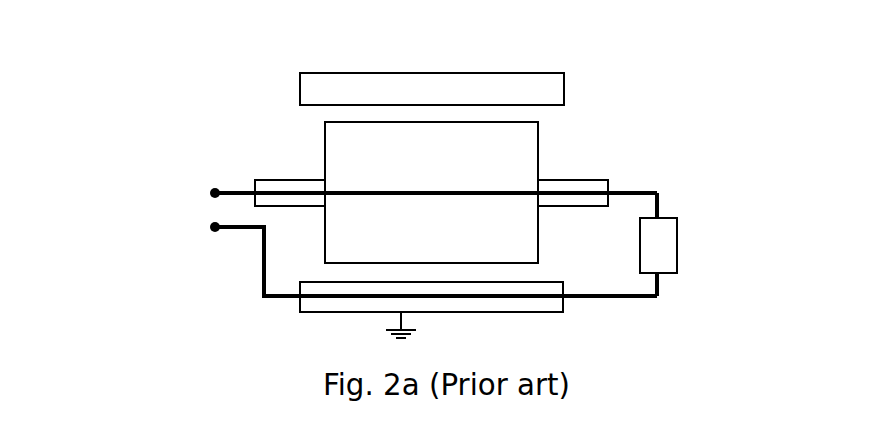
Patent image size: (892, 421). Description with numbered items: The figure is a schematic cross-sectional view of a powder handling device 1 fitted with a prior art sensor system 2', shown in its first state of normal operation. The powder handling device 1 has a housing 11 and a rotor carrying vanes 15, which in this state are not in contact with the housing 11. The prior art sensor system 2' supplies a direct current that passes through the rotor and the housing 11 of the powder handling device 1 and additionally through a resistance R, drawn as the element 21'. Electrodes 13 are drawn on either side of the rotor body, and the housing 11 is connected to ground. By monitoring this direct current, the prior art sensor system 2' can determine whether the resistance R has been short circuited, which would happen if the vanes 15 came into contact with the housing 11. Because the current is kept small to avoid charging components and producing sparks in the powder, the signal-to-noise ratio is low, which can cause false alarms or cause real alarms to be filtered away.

The powder handling device 1 is at (215, 117).
The housing 11 is at (441, 73).
The electrodes (source/drain) 13 is at (610, 185).
The vanes 15 is at (325, 158).
The prior art sensor system 2' is at (368, 225).
The load resistor R 21' is at (721, 230).